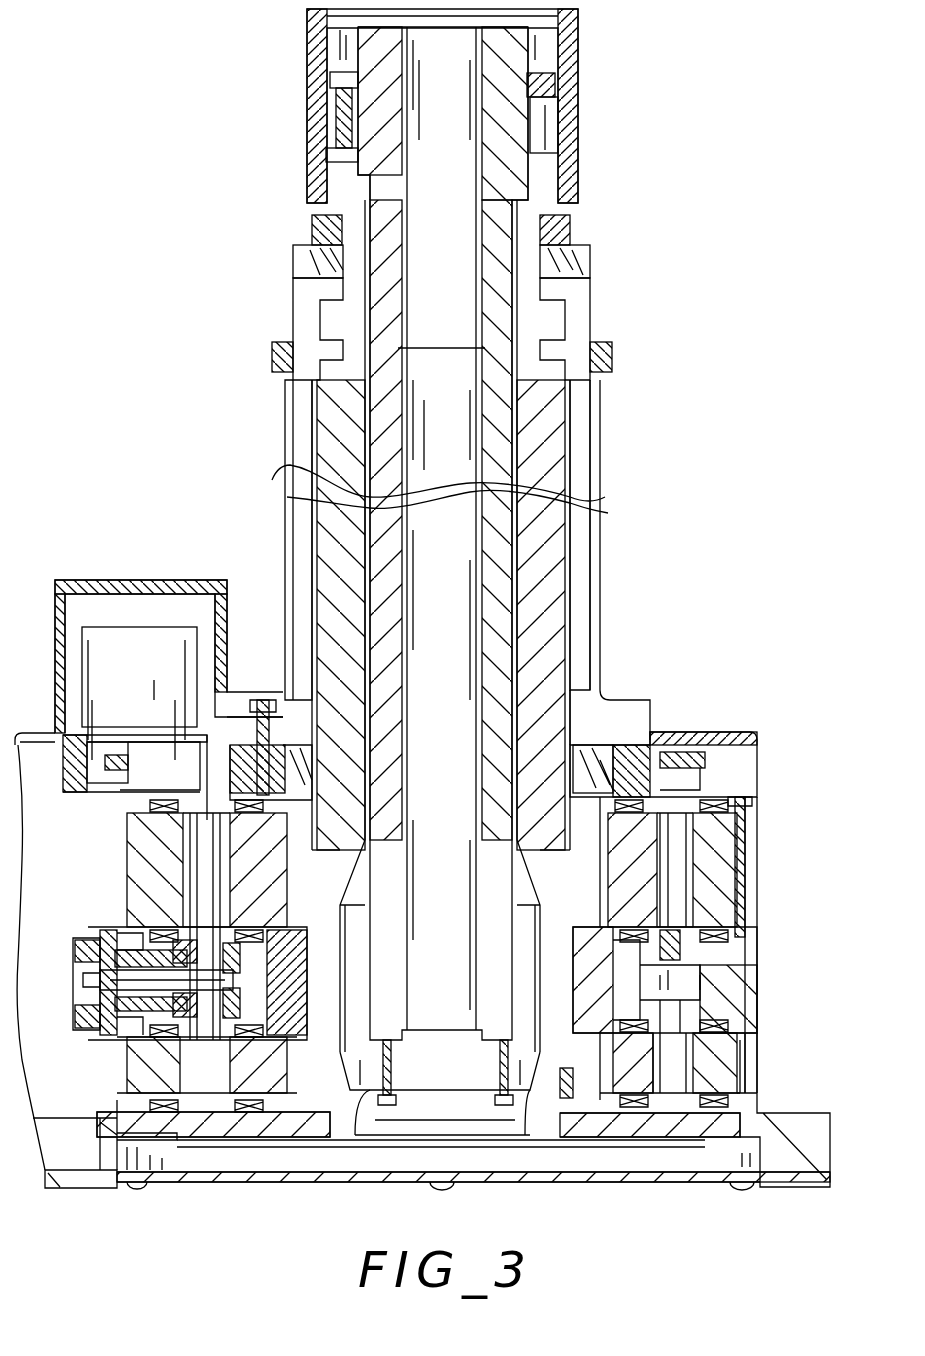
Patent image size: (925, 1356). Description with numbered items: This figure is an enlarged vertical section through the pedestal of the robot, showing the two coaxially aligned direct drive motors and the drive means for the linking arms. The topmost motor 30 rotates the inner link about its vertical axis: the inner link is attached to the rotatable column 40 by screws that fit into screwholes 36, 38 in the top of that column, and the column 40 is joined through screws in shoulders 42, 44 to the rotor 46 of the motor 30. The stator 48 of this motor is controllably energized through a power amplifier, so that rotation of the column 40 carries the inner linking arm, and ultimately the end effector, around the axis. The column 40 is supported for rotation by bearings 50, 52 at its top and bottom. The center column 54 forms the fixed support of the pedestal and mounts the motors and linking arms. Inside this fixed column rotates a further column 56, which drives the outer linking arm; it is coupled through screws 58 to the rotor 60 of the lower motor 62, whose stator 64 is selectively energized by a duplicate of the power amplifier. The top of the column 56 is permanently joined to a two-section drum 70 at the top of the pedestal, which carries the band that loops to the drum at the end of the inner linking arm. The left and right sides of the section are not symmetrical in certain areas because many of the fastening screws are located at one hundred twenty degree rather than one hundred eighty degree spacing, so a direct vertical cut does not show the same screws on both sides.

The topmost motor 30 is at (760, 853).
The screwhole 36 is at (282, 345).
The screwhole 38 is at (600, 347).
The rotatable column 40 is at (300, 462).
The shoulder 42 is at (283, 707).
The shoulder 44 is at (606, 700).
The rotor 46 is at (745, 823).
The stator 48 is at (715, 903).
The bearing 50 is at (300, 255).
The bearing 52 is at (640, 737).
The center column 54 is at (550, 592).
The column 56 is at (500, 540).
The screws 58 is at (505, 1100).
The rotor 60 is at (680, 1045).
The lower motor 62 is at (760, 1044).
The stator 64 is at (720, 1068).
The two-section drum 70 is at (580, 133).